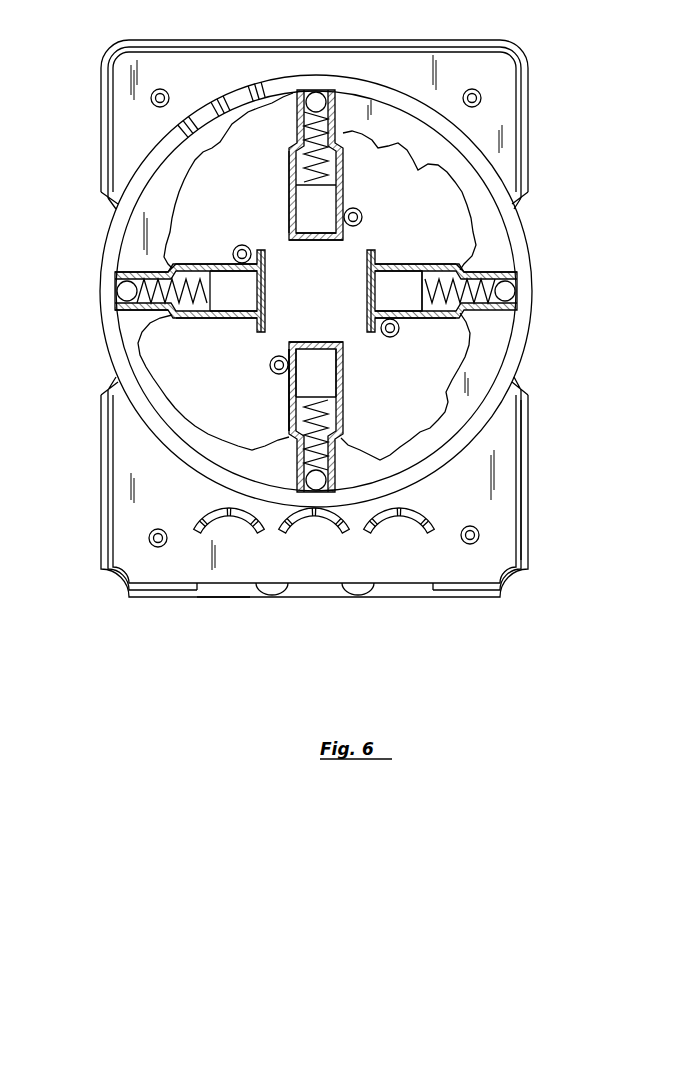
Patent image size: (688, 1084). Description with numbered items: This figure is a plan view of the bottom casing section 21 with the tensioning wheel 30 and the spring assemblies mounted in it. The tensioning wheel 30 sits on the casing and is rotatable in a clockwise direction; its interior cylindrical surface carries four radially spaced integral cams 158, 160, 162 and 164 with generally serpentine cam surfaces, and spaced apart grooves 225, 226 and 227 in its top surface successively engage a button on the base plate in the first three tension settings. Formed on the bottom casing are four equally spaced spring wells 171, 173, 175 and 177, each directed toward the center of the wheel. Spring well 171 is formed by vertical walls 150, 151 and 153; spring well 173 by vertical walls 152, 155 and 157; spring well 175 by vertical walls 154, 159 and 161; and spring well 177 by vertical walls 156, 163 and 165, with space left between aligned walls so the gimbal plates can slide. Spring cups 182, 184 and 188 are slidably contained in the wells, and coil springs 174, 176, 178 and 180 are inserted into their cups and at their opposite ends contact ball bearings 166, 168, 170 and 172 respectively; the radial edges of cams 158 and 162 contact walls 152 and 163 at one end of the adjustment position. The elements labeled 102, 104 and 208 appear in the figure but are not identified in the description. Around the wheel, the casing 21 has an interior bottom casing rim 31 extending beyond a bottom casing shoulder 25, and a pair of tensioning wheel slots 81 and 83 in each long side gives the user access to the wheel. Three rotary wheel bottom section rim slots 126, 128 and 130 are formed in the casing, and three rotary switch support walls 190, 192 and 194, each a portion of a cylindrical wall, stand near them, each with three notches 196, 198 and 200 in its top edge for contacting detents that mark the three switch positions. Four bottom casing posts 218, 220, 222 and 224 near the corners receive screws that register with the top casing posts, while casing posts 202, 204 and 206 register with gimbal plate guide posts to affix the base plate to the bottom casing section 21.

The bottom casing section 21 is at (530, 108).
The bottom casing shoulder 25 is at (526, 511).
The tensioning wheel 30 is at (526, 349).
The interior bottom casing rim 31 is at (519, 470).
The tensioning wheel slot 81 is at (524, 206).
The tensioning wheel slot 83 is at (104, 206).
The spring 102 is at (438, 275).
The spring 104 is at (178, 276).
The coil spring 174 is at (330, 437).
The coil spring 178 is at (330, 156).
The rotary wheel bottom section rim slot 126 is at (217, 597).
The rotary wheel bottom section rim slot 128 is at (297, 597).
The rotary wheel bottom section rim slot 130 is at (398, 597).
The vertical wall 150 is at (342, 402).
The vertical wall 152 is at (413, 315).
The vertical wall 154 is at (341, 176).
The vertical wall 156 is at (211, 318).
The vertical wall 151 is at (287, 394).
The vertical wall 153 is at (322, 341).
The vertical wall 155 is at (421, 263).
The vertical wall 157 is at (368, 295).
The vertical wall 165 is at (264, 280).
The integral cam 158 is at (418, 432).
The integral cam 160 is at (409, 200).
The integral cam 162 is at (216, 145).
The integral cam 164 is at (213, 382).
The vertical wall 159 is at (290, 186).
The vertical wall 161 is at (310, 242).
The vertical wall 163 is at (215, 262).
The ball bearing 166 is at (334, 458).
The ball bearing 168 is at (507, 292).
The ball bearing 170 is at (318, 92).
The ball bearing 172 is at (118, 292).
The spring well 171 is at (283, 420).
The spring well 173 is at (453, 322).
The spring well 175 is at (318, 249).
The spring well 177 is at (183, 321).
The coil spring 176 is at (453, 266).
The coil spring 180 is at (178, 316).
The spring cup 182 is at (328, 382).
The spring cup 184 is at (396, 285).
The spring cup 188 is at (241, 305).
The rotary switch support wall 190 is at (232, 507).
The rotary switch support wall 192 is at (356, 527).
The rotary switch support wall 194 is at (418, 506).
The notch 196 is at (364, 534).
The notch 198 is at (398, 540).
The notch 200 is at (429, 530).
The casing post 202 is at (243, 244).
The casing post 204 is at (363, 217).
The casing post 206 is at (384, 339).
The boss hole 208 is at (279, 355).
The bottom casing post 218 is at (161, 88).
The bottom casing post 220 is at (473, 88).
The bottom casing post 222 is at (480, 536).
The bottom casing post 224 is at (148, 534).
The groove 225 is at (182, 127).
The groove 226 is at (221, 97).
The groove 227 is at (256, 86).